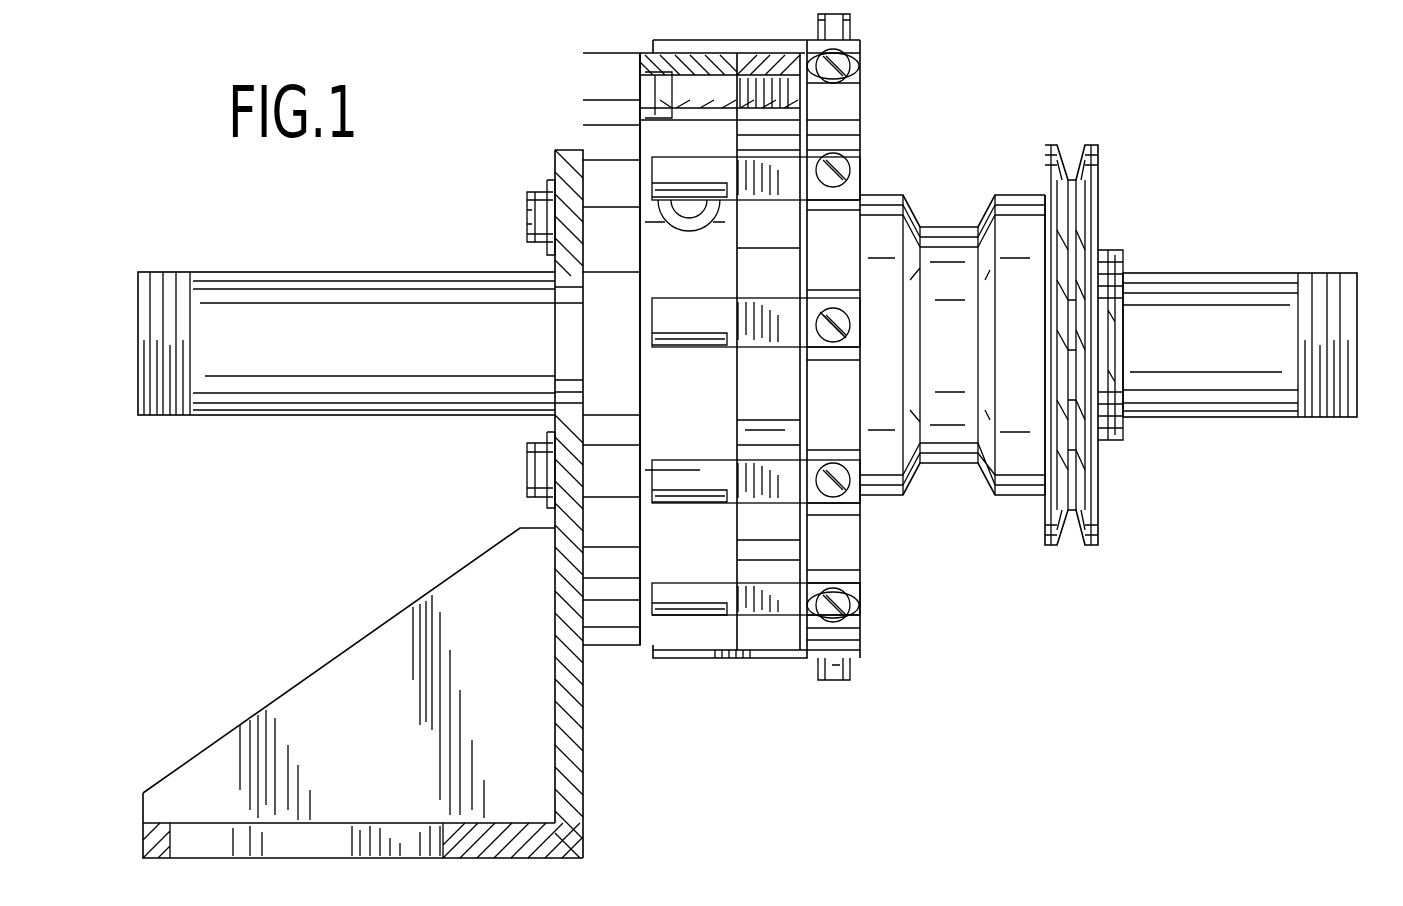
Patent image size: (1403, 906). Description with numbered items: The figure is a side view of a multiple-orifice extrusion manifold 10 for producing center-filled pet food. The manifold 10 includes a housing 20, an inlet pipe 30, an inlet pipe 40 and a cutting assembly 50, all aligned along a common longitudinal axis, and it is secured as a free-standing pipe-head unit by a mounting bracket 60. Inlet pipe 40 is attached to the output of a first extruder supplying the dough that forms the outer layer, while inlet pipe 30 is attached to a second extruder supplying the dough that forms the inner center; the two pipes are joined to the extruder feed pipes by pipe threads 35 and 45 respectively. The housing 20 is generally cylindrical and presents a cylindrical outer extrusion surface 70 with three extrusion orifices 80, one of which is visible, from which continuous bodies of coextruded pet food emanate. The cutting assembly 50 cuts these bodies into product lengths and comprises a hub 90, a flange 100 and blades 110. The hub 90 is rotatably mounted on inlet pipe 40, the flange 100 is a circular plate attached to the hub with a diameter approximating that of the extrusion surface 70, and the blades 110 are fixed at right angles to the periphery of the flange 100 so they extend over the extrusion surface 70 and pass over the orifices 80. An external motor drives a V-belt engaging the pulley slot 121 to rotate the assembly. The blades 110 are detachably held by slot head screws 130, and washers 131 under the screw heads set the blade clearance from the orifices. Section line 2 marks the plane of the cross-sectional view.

The manifold 10 is at (958, 80).
The housing 20 is at (662, 258).
The inlet pipe 30 is at (297, 276).
The pipe threads 35 is at (168, 285).
The inlet pipe 40 is at (1163, 328).
The pipe threads 45 is at (1318, 283).
The cutting assembly 50 is at (818, 532).
The mounting bracket 60 is at (384, 672).
The extrusion surface 70 is at (716, 409).
The extrusion orifices 80 is at (700, 212).
The hub 90 is at (942, 465).
The flange 100 is at (840, 565).
The blades 110 is at (710, 315).
The pulley slot 121 is at (1096, 158).
The slot head screws 130 is at (852, 17).
The washers 131 is at (833, 344).
The section line 2- 2 is at (120, 392).